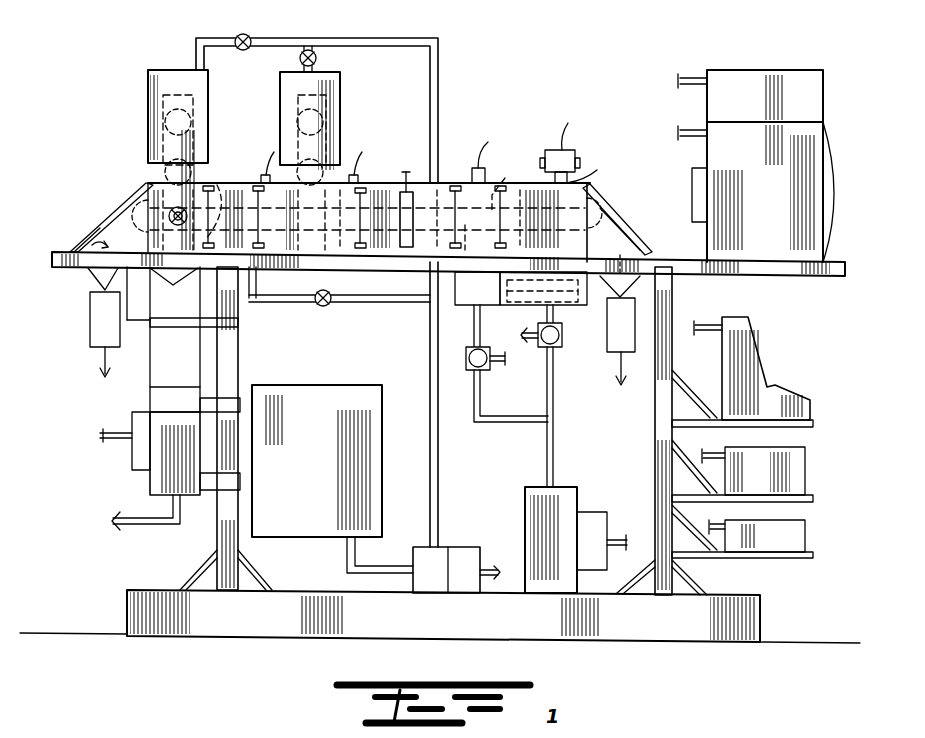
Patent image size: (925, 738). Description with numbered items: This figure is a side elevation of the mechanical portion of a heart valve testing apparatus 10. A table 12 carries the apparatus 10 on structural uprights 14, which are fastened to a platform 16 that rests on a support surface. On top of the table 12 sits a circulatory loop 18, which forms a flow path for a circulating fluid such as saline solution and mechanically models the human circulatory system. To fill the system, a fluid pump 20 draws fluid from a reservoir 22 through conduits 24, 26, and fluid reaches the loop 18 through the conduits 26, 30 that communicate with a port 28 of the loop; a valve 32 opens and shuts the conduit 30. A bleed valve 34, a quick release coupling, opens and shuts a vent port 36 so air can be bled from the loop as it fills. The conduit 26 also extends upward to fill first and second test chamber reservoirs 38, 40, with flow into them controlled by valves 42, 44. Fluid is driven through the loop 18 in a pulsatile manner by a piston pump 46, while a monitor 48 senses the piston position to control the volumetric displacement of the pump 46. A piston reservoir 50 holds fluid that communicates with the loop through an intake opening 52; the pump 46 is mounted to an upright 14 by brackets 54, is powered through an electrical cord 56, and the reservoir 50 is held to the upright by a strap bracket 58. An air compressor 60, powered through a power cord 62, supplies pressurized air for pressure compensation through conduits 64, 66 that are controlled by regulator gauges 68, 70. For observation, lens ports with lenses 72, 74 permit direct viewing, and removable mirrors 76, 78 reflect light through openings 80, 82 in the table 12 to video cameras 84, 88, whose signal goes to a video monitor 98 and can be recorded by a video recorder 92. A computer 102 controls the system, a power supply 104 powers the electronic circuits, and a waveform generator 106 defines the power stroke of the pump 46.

The testing apparatus 10 is at (552, 70).
The table 12 is at (58, 252).
The structural uprights 14 is at (238, 352).
The platform 16 is at (748, 612).
The circulatory loop 18 is at (155, 190).
The fluid pump 20 is at (440, 556).
The reservoir 22 is at (365, 385).
The conduit 24 is at (347, 558).
The conduit 26 is at (398, 44).
The port 28 is at (272, 262).
The conduit 30 is at (368, 308).
The valve 32 is at (328, 306).
The bleed valve 34 is at (481, 165).
The vent port 36 is at (510, 185).
The first test chamber reservoir 38 is at (340, 90).
The second test chamber reservoir 40 is at (146, 78).
The valve 42 is at (318, 50).
The valve 44 is at (248, 36).
The piston pump 46 is at (152, 480).
The monitor 48 is at (132, 425).
The piston reservoir 50 is at (165, 382).
The intake opening 52 is at (215, 183).
The brackets 54 is at (225, 397).
The electrical cord 56 is at (150, 525).
The strap bracket 58 is at (238, 322).
The air compressor 60 is at (570, 492).
The power cord 62 is at (606, 518).
The conduit 64 is at (555, 394).
The conduit 66 is at (482, 394).
The regulator gauge 68 is at (562, 345).
The regulator gauge 70 is at (480, 348).
The lens 72 is at (130, 213).
The lens 74 is at (604, 208).
The removable mirror 76 is at (100, 225).
The removable mirror 78 is at (627, 222).
The opening 80 is at (82, 268).
The opening 82 is at (622, 254).
The video camera 84 is at (90, 321).
The video camera 88 is at (607, 326).
The video recorder 92 is at (818, 82).
The video monitor 98 is at (820, 137).
The computer 102 is at (752, 357).
The power supply 104 is at (800, 530).
The waveform generator 106 is at (800, 464).